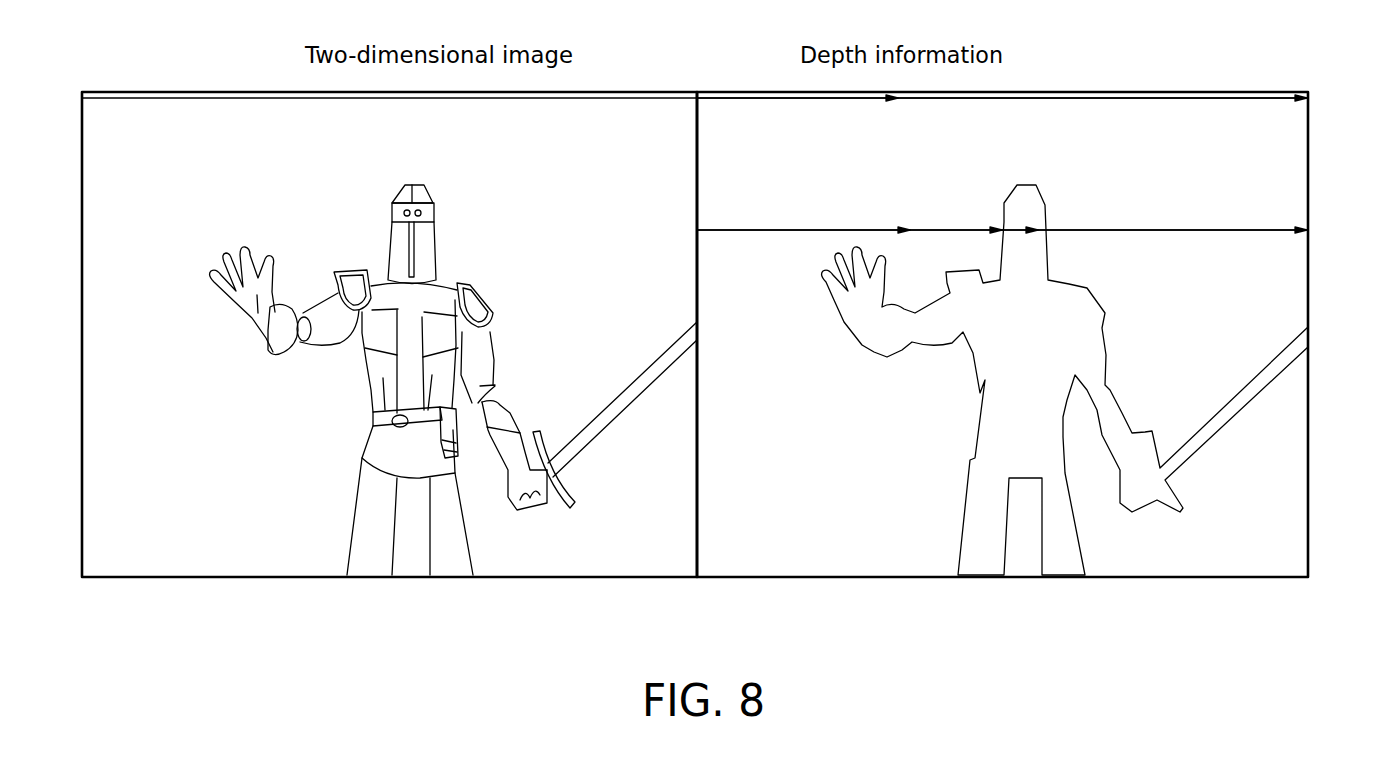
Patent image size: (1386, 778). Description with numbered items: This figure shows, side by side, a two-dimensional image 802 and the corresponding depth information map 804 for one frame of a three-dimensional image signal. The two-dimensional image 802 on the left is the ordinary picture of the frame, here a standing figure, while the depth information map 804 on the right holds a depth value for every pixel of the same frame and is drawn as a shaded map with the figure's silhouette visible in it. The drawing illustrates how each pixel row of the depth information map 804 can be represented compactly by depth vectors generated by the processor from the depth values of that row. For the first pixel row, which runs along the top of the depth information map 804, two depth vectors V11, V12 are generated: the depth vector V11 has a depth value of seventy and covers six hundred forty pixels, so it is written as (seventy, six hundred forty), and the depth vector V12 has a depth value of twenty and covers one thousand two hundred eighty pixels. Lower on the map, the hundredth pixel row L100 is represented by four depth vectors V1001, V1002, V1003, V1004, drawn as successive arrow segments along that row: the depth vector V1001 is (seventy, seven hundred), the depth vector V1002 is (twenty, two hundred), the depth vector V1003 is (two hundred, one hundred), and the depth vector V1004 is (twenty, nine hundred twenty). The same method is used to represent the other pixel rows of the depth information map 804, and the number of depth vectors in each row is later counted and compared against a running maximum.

The two-dimensional image 802 is at (143, 90).
The depth information map 804 is at (1237, 90).
The 100th pixel row L100 is at (1036, 236).
The depth vector V11 is at (797, 115).
The depth vector V12 is at (1102, 115).
The depth vector V1001 is at (803, 218).
The depth vector V1002 is at (953, 228).
The depth vector V1003 is at (1023, 229).
The depth vector V1004 is at (1172, 247).